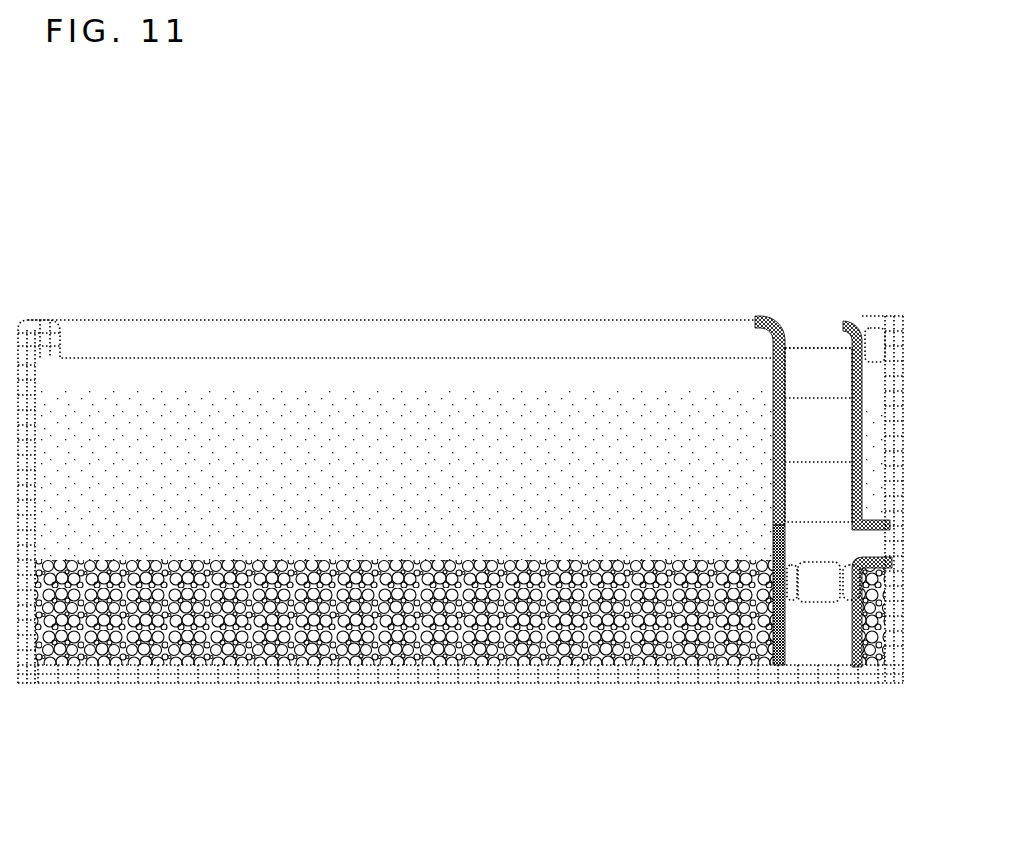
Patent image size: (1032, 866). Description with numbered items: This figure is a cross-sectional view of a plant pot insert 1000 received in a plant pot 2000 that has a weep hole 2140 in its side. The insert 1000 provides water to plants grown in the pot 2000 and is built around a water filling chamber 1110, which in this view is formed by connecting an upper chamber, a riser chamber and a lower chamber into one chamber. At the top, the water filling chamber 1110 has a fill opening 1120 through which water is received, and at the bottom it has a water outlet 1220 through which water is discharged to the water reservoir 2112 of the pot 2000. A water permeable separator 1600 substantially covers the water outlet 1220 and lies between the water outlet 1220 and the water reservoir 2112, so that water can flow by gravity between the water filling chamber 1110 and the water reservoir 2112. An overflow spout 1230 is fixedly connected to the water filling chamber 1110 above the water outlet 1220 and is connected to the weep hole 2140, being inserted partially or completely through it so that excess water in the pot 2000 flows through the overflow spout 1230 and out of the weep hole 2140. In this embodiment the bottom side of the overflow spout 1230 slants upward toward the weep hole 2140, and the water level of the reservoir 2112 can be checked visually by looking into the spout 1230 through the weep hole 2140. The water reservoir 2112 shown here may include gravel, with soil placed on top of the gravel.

The plant pot insert 1000 is at (775, 398).
The water filling chamber 1110 is at (823, 372).
The fill opening 1120 is at (802, 345).
The water outlet 1220 is at (828, 585).
The overflow spout 1230 is at (890, 524).
The water permeable separator 1600 is at (771, 623).
The plant pot 2000 is at (222, 672).
The water reservoir 2112 is at (480, 648).
The weep hole 2140 is at (897, 540).